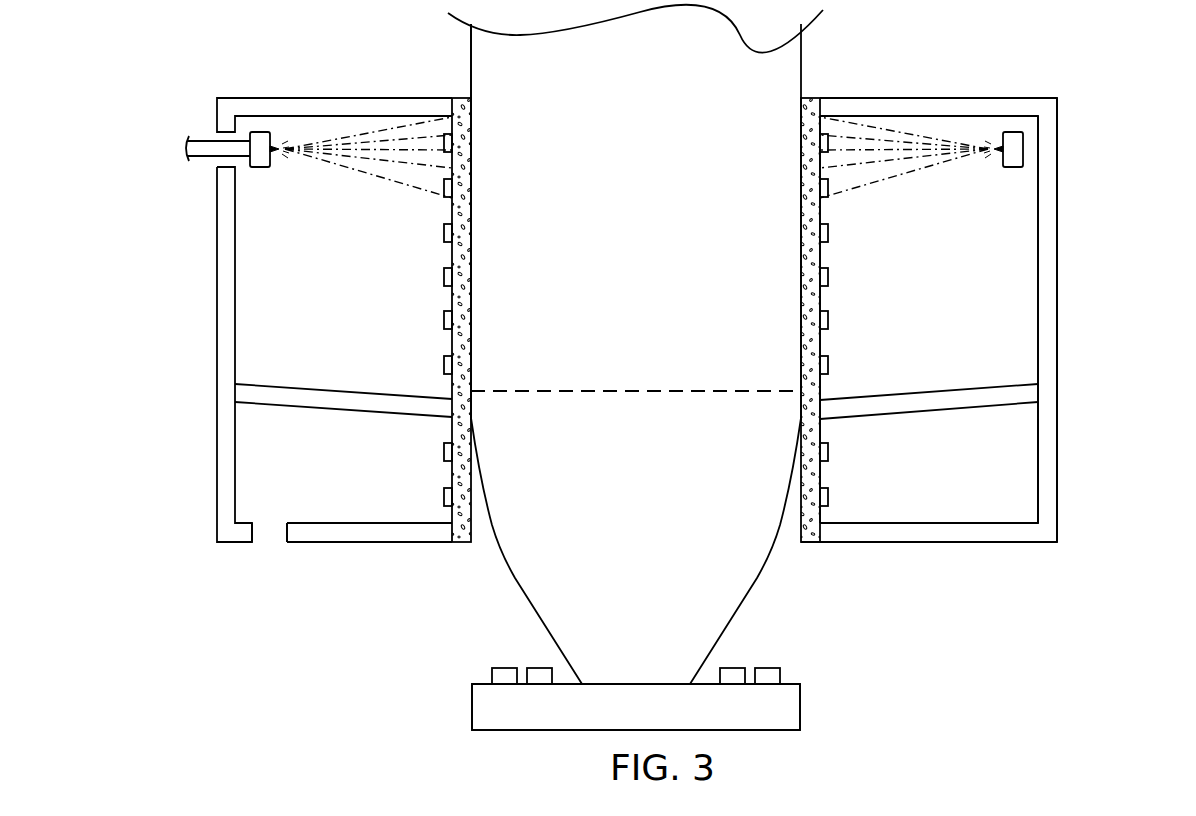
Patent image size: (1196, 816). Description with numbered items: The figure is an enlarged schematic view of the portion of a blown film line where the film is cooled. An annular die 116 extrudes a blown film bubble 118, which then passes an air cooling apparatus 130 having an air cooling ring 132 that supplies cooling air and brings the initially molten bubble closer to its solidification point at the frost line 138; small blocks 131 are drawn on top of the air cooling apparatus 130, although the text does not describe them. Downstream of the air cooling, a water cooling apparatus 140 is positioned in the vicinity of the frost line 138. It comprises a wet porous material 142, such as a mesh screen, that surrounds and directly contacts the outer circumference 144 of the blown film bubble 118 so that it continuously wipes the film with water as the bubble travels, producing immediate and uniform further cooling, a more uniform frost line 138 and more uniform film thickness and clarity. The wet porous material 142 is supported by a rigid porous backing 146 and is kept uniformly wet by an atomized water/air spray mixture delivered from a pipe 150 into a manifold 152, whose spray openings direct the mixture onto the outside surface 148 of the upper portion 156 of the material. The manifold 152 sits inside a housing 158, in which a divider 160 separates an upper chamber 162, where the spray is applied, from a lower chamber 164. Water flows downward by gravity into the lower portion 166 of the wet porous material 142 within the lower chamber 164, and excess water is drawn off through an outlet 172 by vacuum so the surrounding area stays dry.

The annular die 116 is at (588, 694).
The blown film bubble 118 is at (745, 598).
The air cooling apparatus 130 is at (780, 704).
The heaters 131 is at (770, 667).
The air cooling ring 132 is at (636, 707).
The frost line 138 is at (645, 392).
The water cooling apparatus 140 is at (327, 98).
The wet porous material 142 is at (823, 212).
The outer circumference 144 is at (470, 66).
The rigid porous backing 146 is at (830, 277).
The outside surface 148 is at (808, 162).
The pipe 150 is at (206, 157).
The manifold 152 is at (262, 168).
The upper portion 156 is at (812, 118).
The housing 158 is at (1048, 203).
The divider 160 is at (1012, 395).
The upper chamber 162 is at (1020, 266).
The lower chamber 164 is at (1015, 460).
The lower portion 166 is at (806, 542).
The outlet 172 is at (268, 540).